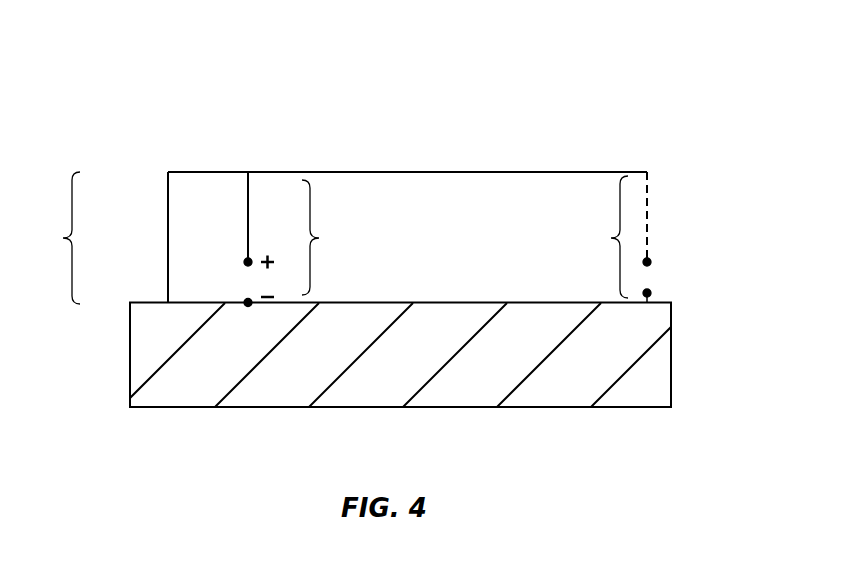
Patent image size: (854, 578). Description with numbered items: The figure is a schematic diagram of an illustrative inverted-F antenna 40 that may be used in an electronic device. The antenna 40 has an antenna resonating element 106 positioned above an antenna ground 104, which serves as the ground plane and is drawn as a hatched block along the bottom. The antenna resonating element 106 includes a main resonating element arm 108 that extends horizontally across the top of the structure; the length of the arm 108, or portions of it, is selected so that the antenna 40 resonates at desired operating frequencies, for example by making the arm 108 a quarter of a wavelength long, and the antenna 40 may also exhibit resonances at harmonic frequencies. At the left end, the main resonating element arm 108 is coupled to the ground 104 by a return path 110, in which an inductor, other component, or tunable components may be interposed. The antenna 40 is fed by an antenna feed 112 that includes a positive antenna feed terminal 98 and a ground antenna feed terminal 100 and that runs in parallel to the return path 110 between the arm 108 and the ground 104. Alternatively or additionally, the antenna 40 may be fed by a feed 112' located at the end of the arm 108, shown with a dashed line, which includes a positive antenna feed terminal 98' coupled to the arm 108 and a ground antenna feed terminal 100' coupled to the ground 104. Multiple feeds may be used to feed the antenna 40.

The inverted-F antenna 40 is at (634, 75).
The positive antenna feed terminal 98 is at (235, 220).
The positive antenna feed terminal 98' is at (681, 219).
The ground antenna feed terminal 100 is at (230, 288).
The ground antenna feed terminal 100' is at (687, 285).
The antenna ground 104 is at (143, 372).
The antenna resonating element 106 is at (53, 238).
The main resonating element arm 108 is at (440, 171).
The return path 110 is at (168, 235).
The antenna feed 112 is at (330, 237).
The antenna feed 112' is at (602, 237).